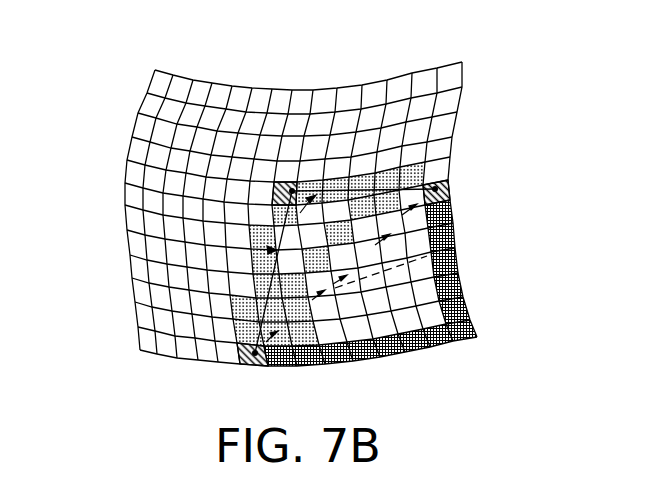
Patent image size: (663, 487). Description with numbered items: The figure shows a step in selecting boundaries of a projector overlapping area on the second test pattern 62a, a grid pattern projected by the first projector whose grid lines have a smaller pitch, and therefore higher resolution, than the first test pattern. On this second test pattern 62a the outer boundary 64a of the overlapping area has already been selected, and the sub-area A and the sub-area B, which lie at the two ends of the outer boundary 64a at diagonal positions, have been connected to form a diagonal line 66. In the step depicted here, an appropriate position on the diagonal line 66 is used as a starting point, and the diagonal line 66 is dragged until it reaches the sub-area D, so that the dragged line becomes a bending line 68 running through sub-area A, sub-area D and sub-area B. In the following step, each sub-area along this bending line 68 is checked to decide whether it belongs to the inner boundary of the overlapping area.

The second test pattern 62a is at (380, 78).
The outer boundary 64a is at (448, 342).
The diagonal line 66 is at (444, 252).
The bending line 68 is at (300, 213).
The sub-area A is at (248, 366).
The sub-area B is at (448, 186).
The sub-area D is at (292, 190).